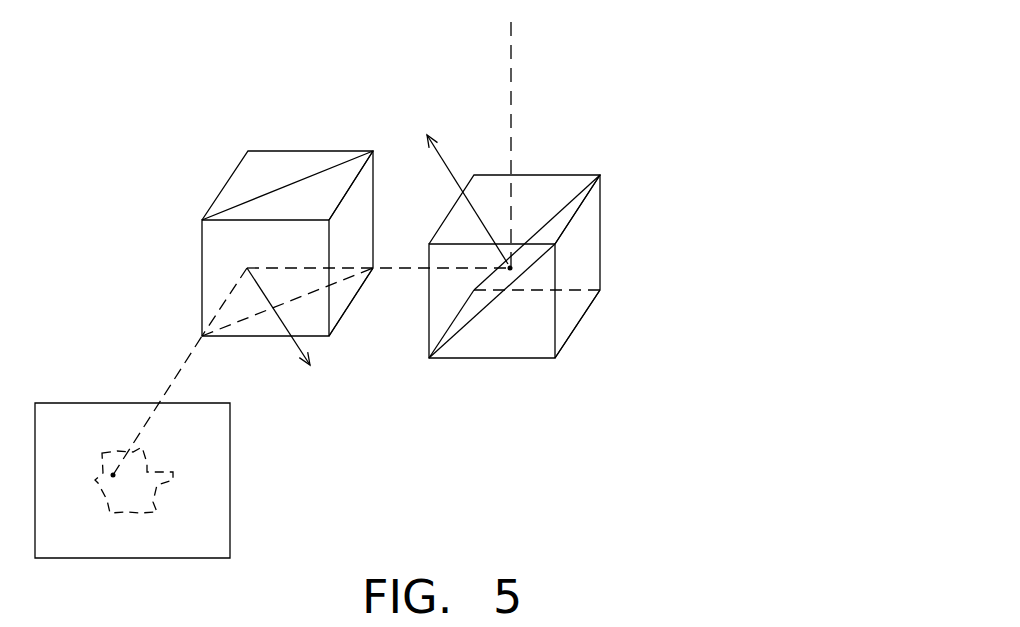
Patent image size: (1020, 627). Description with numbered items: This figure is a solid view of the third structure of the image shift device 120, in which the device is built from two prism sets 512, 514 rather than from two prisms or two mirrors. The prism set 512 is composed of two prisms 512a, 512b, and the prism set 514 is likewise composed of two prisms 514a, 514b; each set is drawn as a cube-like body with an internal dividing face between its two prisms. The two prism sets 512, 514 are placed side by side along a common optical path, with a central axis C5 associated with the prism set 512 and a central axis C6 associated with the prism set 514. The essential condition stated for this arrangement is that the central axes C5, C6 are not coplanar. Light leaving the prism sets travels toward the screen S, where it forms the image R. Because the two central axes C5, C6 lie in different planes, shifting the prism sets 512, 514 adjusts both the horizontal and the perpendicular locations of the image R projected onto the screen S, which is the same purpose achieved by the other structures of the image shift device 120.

The image shift device 120 is at (747, 160).
The prism set 512 is at (604, 213).
The prism 512a is at (578, 323).
The prism 512b is at (539, 174).
The prism set 514 is at (197, 278).
The prism 514a is at (219, 190).
The prism 514b is at (352, 302).
The central axis C5 is at (459, 182).
The central axis C6 is at (287, 337).
The screen S is at (85, 403).
The image R is at (147, 472).